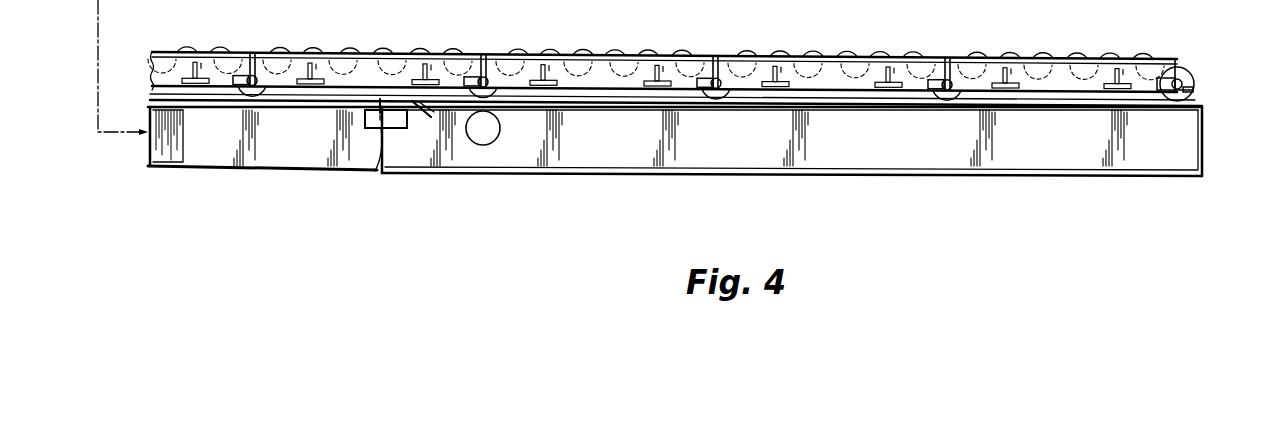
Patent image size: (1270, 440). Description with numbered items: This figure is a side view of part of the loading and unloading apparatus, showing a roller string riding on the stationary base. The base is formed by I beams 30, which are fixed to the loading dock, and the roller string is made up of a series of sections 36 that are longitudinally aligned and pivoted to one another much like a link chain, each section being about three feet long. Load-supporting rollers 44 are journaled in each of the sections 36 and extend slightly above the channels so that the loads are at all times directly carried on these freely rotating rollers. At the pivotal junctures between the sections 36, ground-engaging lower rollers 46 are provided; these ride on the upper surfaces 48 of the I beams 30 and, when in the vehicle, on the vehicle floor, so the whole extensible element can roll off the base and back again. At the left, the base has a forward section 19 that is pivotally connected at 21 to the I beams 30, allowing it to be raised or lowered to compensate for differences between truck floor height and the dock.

The forward section 19 is at (288, 148).
The pivotal connection 21 is at (391, 124).
The I beams 30 is at (636, 150).
The sections 36 is at (402, 50).
The load-supporting rollers 44 is at (612, 48).
The lower rollers 46 is at (714, 57).
The upper surfaces 48 is at (592, 96).